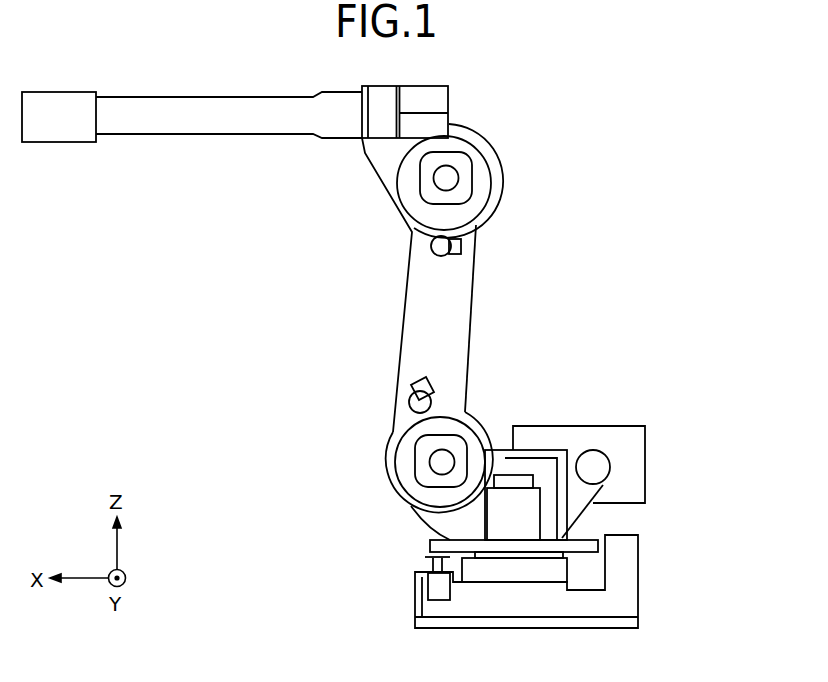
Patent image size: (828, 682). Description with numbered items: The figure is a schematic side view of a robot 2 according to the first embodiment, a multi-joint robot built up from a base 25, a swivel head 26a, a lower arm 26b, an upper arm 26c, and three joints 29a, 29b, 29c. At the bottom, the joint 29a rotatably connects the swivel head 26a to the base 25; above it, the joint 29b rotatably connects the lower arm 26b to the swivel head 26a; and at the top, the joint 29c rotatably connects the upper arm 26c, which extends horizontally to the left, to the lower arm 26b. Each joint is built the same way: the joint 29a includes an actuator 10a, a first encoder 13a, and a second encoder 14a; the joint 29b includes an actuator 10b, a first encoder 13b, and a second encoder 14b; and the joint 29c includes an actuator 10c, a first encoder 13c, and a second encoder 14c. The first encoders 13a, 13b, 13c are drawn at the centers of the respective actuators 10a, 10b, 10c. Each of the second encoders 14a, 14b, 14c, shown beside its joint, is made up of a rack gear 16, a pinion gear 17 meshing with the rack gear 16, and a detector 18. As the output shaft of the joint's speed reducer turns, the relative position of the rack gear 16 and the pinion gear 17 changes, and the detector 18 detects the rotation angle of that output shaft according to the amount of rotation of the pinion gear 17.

The robot 2 is at (654, 190).
The actuator 10a is at (520, 516).
The actuator 10b is at (418, 450).
The actuator 10c is at (455, 167).
The first encoder 13a is at (518, 484).
The first encoder 13b is at (442, 463).
The first encoder 13c is at (448, 178).
The second encoder 14a is at (343, 528).
The second encoder 14b is at (340, 313).
The second encoder 14c is at (549, 204).
The rack gear 16 is at (460, 230).
The pinion gear 17 is at (449, 246).
The detector 18 is at (461, 253).
The base 25 is at (600, 603).
The swivel head 26a is at (452, 538).
The lower arm 26b is at (458, 318).
The upper arm 26c is at (176, 121).
The joint 29a is at (605, 522).
The joint 29b is at (499, 403).
The joint 29c is at (501, 123).